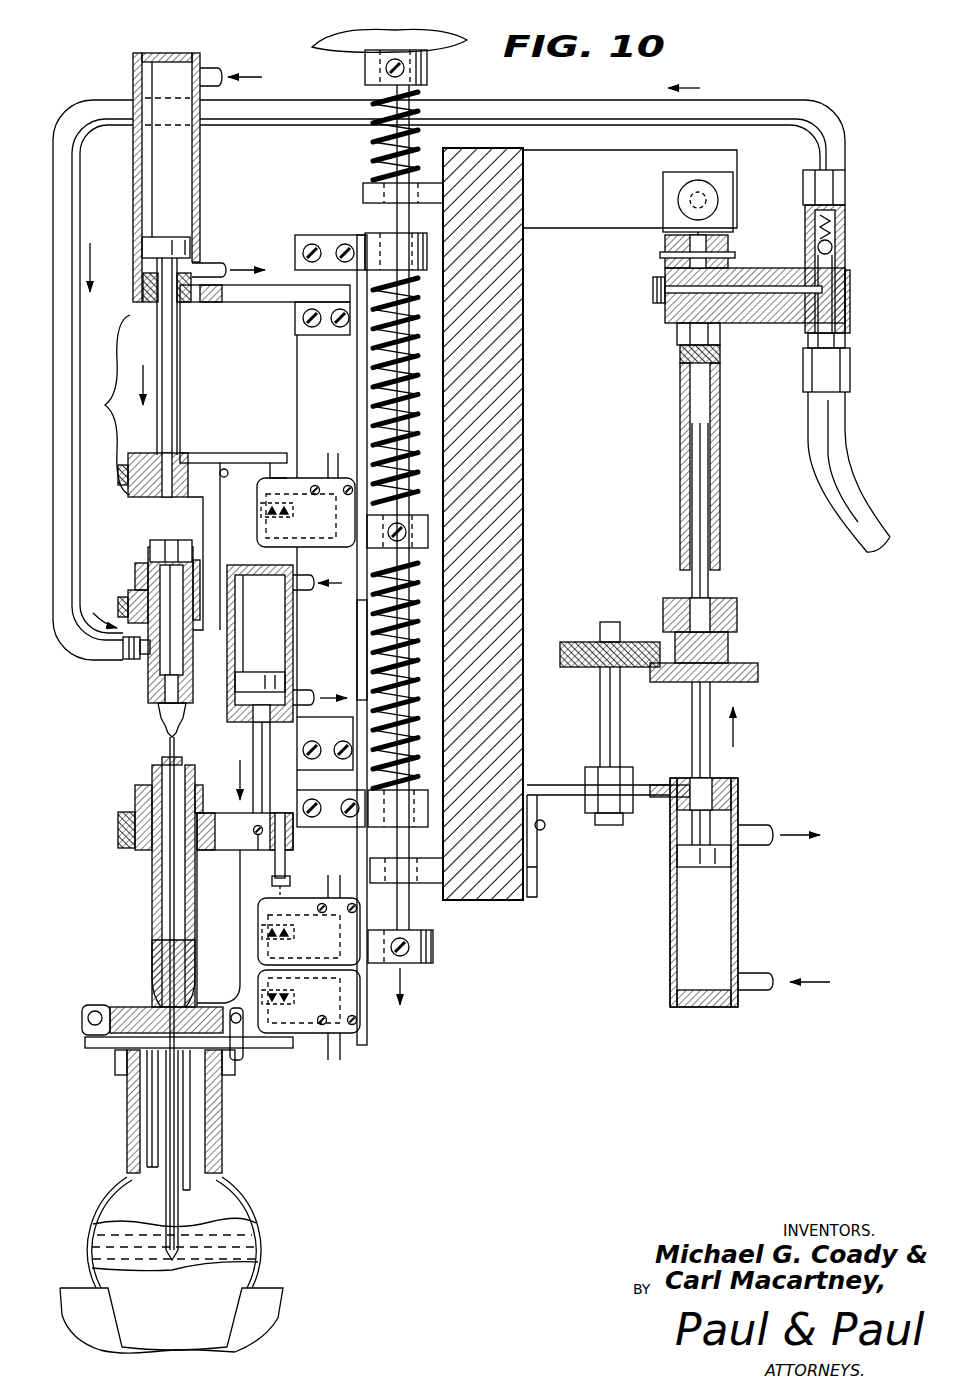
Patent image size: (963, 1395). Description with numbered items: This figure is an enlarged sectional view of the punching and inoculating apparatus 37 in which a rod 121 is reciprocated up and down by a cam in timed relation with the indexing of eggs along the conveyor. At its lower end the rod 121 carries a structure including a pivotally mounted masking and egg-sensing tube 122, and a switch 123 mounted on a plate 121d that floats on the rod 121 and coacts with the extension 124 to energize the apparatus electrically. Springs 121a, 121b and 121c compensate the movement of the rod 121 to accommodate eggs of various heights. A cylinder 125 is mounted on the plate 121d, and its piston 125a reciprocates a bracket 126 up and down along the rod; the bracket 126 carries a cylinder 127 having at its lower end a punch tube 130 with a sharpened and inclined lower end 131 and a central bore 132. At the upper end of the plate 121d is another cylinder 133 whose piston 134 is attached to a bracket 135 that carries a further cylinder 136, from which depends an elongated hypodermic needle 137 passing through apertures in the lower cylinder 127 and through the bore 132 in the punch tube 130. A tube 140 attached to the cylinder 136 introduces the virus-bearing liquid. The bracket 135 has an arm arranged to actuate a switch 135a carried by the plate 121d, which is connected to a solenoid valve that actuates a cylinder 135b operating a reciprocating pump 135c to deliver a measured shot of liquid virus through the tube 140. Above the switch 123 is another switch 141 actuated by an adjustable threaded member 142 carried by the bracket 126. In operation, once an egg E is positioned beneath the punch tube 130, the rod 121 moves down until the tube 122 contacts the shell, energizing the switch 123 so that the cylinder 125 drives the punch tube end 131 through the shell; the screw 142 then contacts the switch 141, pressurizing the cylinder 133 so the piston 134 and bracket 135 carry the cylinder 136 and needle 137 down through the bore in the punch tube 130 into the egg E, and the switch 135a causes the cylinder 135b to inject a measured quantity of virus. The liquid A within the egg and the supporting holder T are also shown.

The tube 140 is at (833, 131).
The cylinder 133 is at (183, 154).
The piston 134 is at (172, 342).
The punching and inoculating apparatus 37 is at (113, 405).
The rod 121 is at (385, 215).
The spring 121a is at (378, 155).
The spring 121b is at (370, 365).
The spring 121c is at (367, 632).
The plate 121d is at (300, 365).
The bracket 135 is at (200, 453).
The switch 135a is at (308, 478).
The cylinder 135b is at (700, 945).
The reciprocating pump 135c is at (770, 323).
The cylinder 136 is at (150, 678).
The hypodermic needle 137 is at (168, 745).
The cylinder 125 is at (270, 612).
The piston 125a is at (258, 750).
The bracket 126 is at (245, 849).
The adjustable threaded member 142 is at (272, 882).
The switch 141 is at (310, 897).
The switch 123 is at (360, 1002).
The cylinder 127 is at (152, 897).
The punch tube 130 is at (165, 968).
The masking and egg-sensing tube 122 is at (222, 1105).
The extension 124 is at (282, 1050).
The central bore 132 is at (187, 1137).
The sharpened and inclined lower end 131 is at (185, 1192).
The egg E is at (255, 1210).
The liquid A is at (110, 1245).
The holder jaws T is at (262, 1294).